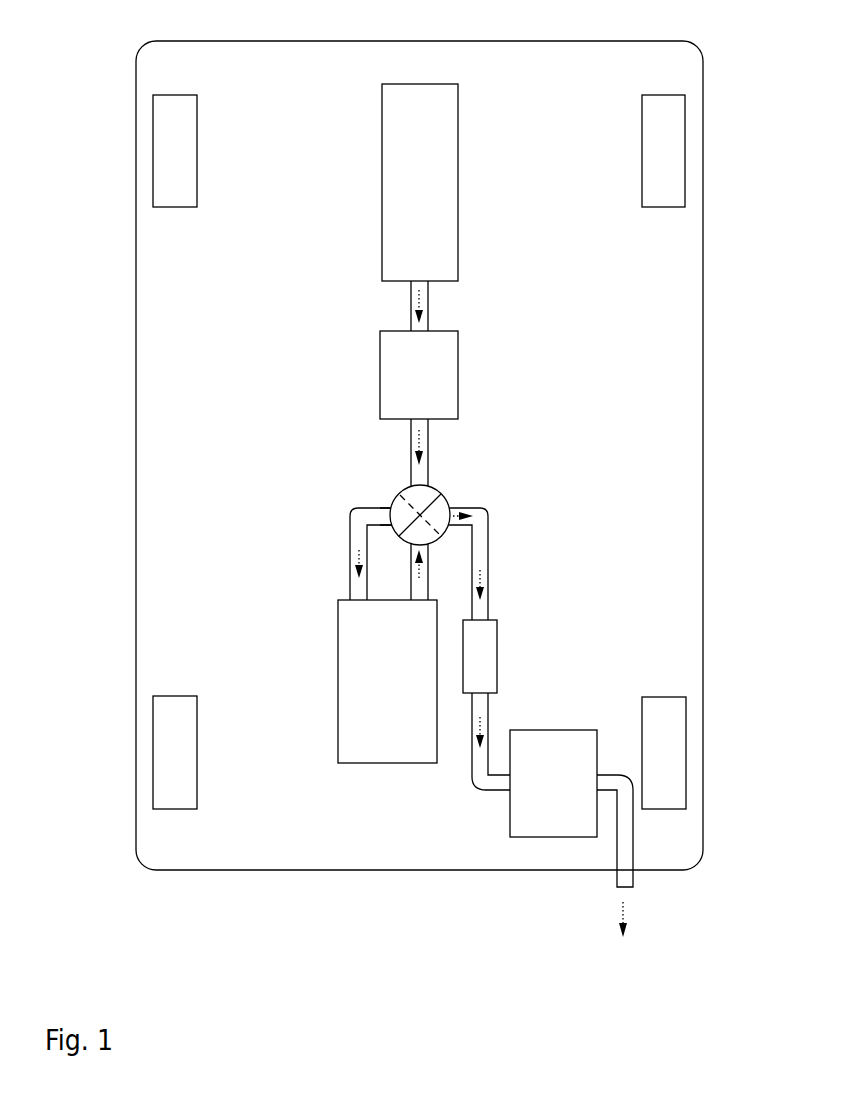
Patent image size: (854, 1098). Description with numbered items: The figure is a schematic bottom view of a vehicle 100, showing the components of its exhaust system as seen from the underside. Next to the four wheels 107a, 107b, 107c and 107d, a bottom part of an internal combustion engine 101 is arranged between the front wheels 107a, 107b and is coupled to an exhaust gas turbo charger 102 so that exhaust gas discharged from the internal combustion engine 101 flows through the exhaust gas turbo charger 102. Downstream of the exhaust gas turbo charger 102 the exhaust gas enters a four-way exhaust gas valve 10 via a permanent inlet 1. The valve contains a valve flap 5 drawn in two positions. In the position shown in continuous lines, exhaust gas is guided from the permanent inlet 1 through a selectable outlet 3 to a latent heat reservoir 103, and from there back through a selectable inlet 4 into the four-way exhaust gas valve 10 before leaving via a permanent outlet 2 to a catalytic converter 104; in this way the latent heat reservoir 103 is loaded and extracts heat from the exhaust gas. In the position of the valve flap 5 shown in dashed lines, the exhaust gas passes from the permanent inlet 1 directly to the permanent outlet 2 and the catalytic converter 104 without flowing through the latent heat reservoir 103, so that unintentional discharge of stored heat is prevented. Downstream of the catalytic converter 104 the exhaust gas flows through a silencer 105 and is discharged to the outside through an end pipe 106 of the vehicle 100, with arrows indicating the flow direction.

The vehicle 100 is at (705, 77).
The internal combustion engine 101 is at (458, 125).
The exhaust gas turbo charger 102 is at (458, 362).
The latent heat reservoir 103 is at (388, 763).
The catalytic converter 104 is at (497, 637).
The silencer 105 is at (572, 730).
The end pipe 106 is at (633, 880).
The wheel 107a is at (197, 152).
The wheel 107b is at (640, 150).
The wheel 107c is at (663, 697).
The wheel 107d is at (197, 752).
The permanent inlet 1 is at (421, 486).
The four-way exhaust gas valve 10 is at (432, 484).
The permanent outlet 2 is at (453, 505).
The selectable outlet 3 is at (372, 506).
The selectable inlet 4 is at (427, 552).
The valve flap 5 is at (390, 520).